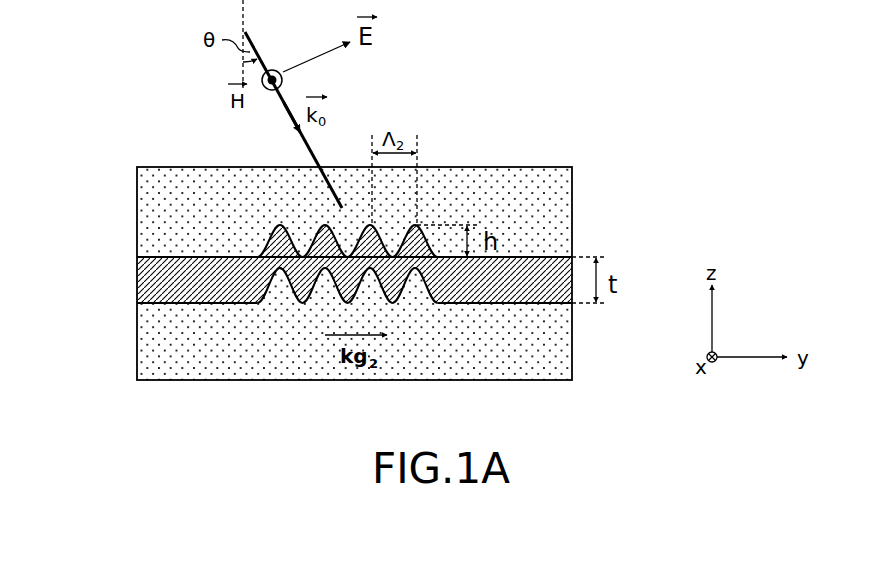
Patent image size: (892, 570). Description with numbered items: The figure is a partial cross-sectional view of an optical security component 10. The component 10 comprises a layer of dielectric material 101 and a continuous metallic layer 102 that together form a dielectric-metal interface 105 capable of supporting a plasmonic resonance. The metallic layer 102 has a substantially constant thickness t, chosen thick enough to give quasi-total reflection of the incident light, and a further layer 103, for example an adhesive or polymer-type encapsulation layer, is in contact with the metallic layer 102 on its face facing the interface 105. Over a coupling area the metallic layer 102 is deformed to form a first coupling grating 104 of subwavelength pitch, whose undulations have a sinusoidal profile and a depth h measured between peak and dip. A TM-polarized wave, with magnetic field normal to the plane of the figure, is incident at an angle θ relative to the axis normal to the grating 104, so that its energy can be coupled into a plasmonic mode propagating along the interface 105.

The security component 10 is at (726, 191).
The layer of dielectric material 101 is at (137, 211).
The metallic layer 102 is at (137, 285).
The layer 103 is at (137, 365).
The first coupling grating 104 is at (418, 226).
The dielectric-metal interface 105 is at (192, 257).